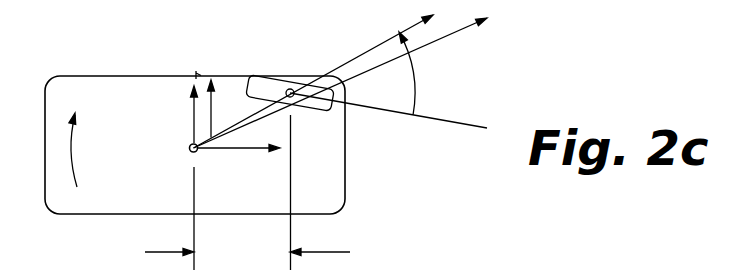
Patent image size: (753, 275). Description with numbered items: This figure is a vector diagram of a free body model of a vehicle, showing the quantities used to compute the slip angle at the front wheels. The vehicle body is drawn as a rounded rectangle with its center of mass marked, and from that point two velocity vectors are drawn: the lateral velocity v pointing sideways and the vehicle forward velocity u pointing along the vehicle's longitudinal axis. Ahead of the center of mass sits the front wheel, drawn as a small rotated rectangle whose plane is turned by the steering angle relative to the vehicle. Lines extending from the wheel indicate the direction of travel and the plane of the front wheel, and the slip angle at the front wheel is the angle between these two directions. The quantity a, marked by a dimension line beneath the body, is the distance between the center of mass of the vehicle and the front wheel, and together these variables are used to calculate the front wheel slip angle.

The lateral velocity v is at (182, 114).
The vehicle forward velocity u is at (239, 166).
The distance between center of mass and front wheels a is at (247, 255).
The front wheel is at (366, 101).